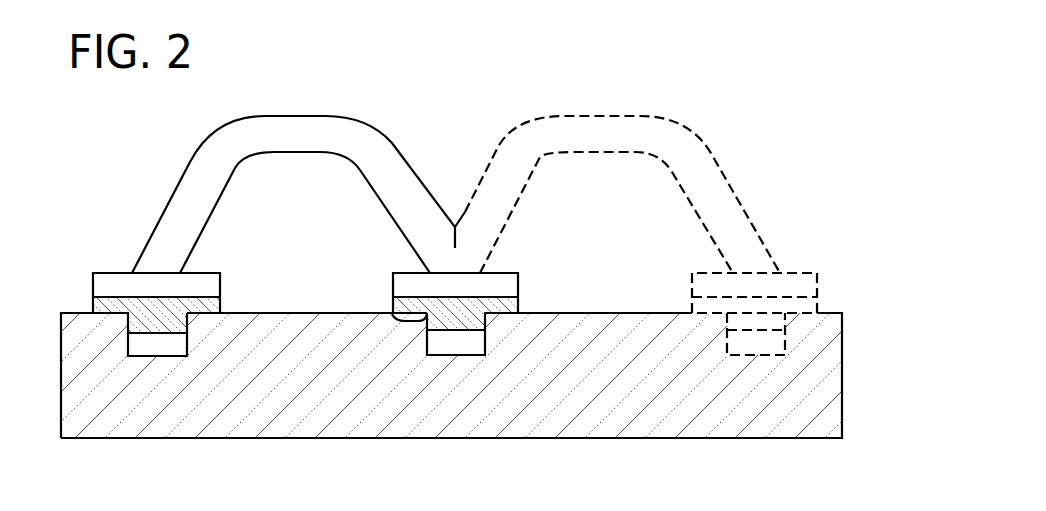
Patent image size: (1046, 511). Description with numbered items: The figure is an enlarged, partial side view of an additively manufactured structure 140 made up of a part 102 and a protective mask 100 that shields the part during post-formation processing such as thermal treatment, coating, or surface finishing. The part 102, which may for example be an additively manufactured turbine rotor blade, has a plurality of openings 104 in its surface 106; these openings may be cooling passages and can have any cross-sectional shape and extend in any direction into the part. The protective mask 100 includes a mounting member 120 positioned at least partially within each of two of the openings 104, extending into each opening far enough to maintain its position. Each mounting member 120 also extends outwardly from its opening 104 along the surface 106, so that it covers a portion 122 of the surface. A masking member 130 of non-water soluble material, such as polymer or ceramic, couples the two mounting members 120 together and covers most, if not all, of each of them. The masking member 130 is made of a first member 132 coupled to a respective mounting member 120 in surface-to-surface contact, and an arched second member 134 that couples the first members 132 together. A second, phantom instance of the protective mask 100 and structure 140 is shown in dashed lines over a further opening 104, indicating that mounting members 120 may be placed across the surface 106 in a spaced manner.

The protective mask 100 is at (295, 102).
The part 102 is at (75, 328).
The openings 104 is at (148, 347).
The surface 106 is at (283, 313).
The mounting member 120 is at (213, 307).
The portion 122 is at (408, 322).
The masking member 130 is at (330, 113).
The first member 132 is at (200, 273).
The second member 134 is at (392, 132).
The additively manufactured structure 140 is at (648, 105).